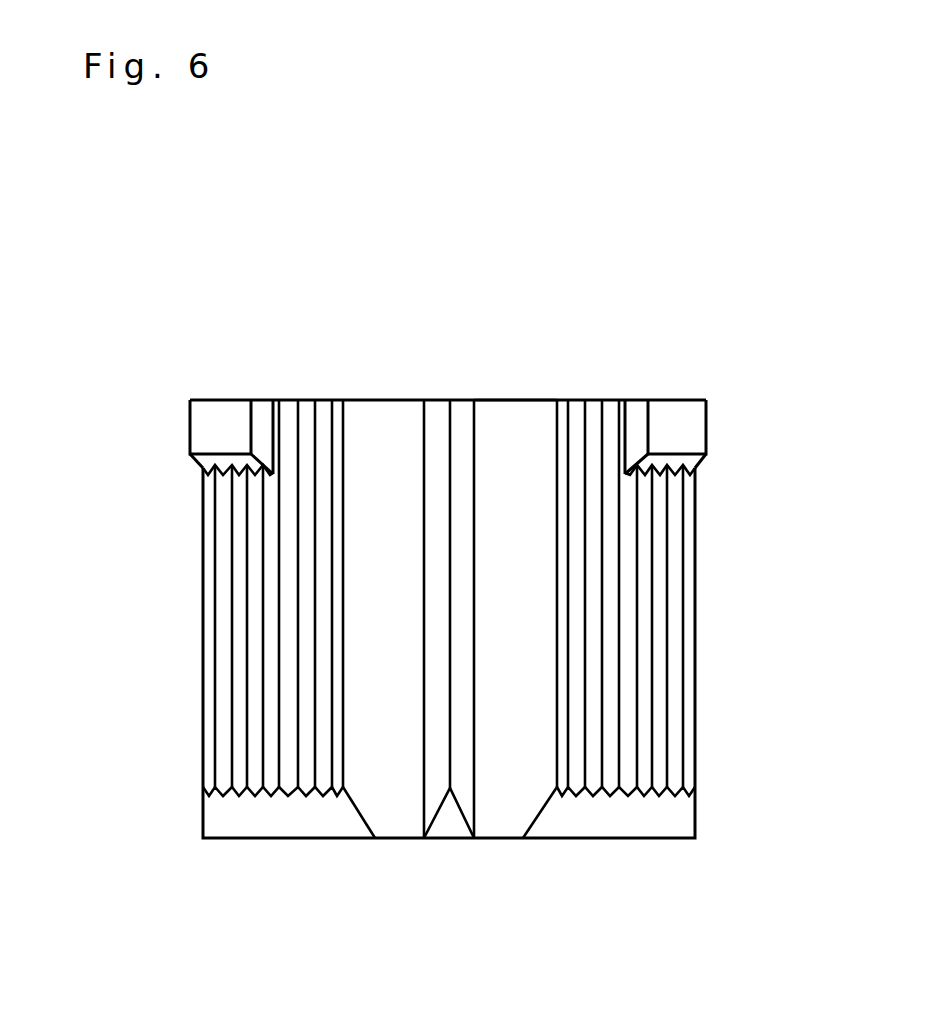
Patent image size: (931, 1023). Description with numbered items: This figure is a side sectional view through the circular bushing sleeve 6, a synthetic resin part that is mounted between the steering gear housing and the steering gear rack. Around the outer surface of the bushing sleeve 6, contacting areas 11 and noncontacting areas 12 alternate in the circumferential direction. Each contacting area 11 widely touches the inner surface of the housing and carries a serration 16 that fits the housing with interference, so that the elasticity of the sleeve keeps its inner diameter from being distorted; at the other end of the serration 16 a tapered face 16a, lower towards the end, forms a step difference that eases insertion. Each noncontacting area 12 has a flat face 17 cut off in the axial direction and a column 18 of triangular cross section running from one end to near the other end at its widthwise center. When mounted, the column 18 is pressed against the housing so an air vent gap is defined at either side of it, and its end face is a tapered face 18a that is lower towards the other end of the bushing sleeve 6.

The bushing sleeve 6 is at (720, 699).
The contacting area 11 is at (299, 378).
The noncontacting area 12 is at (487, 380).
The serration 16 is at (247, 521).
The tapered face 16a is at (264, 818).
The flat face 17 is at (391, 820).
The column 18 is at (433, 420).
The tapered face 18a is at (448, 830).